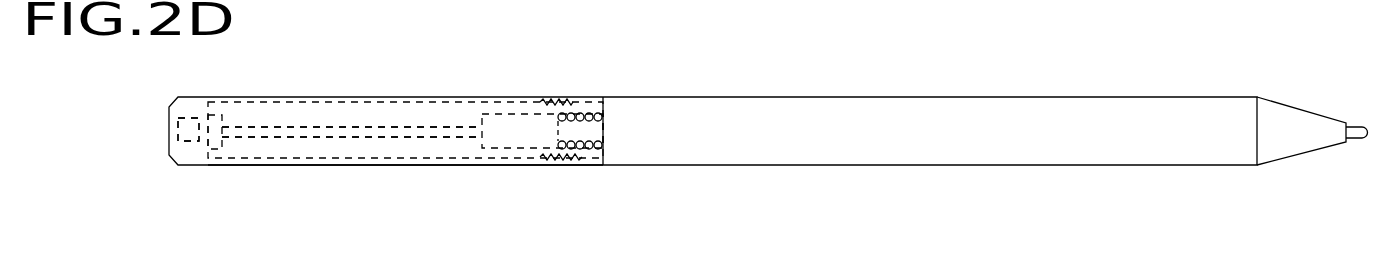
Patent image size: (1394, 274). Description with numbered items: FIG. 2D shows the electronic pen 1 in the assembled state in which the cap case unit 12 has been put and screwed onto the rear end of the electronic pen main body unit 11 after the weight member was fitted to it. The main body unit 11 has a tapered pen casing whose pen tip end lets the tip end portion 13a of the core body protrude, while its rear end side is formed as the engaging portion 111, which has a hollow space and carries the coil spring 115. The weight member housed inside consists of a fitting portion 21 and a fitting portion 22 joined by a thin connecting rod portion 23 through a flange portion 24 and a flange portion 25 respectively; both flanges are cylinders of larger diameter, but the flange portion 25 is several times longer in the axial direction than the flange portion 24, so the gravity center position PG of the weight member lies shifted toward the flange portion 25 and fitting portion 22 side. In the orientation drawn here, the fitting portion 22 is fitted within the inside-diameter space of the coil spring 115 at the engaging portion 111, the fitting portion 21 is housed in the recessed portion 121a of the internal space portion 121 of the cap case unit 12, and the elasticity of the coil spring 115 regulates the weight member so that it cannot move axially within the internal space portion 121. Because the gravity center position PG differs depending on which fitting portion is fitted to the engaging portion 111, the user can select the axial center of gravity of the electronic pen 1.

The electronic pen 1 is at (689, 93).
The electronic pen main body unit 11 is at (955, 108).
The engaging portion 111 is at (524, 101).
The coil spring 115 is at (590, 140).
The cap case unit 12 is at (381, 101).
The internal space portion 121 is at (297, 112).
The recessed portion 121a is at (197, 118).
The tip end portion 13a is at (1350, 127).
The fitting portion 21 is at (196, 141).
The fitting portion 22 is at (573, 137).
The connecting rod portion 23 is at (335, 133).
The flange portion 24 is at (217, 149).
The flange portion 25 is at (520, 139).
The gravity center position PG is at (437, 171).